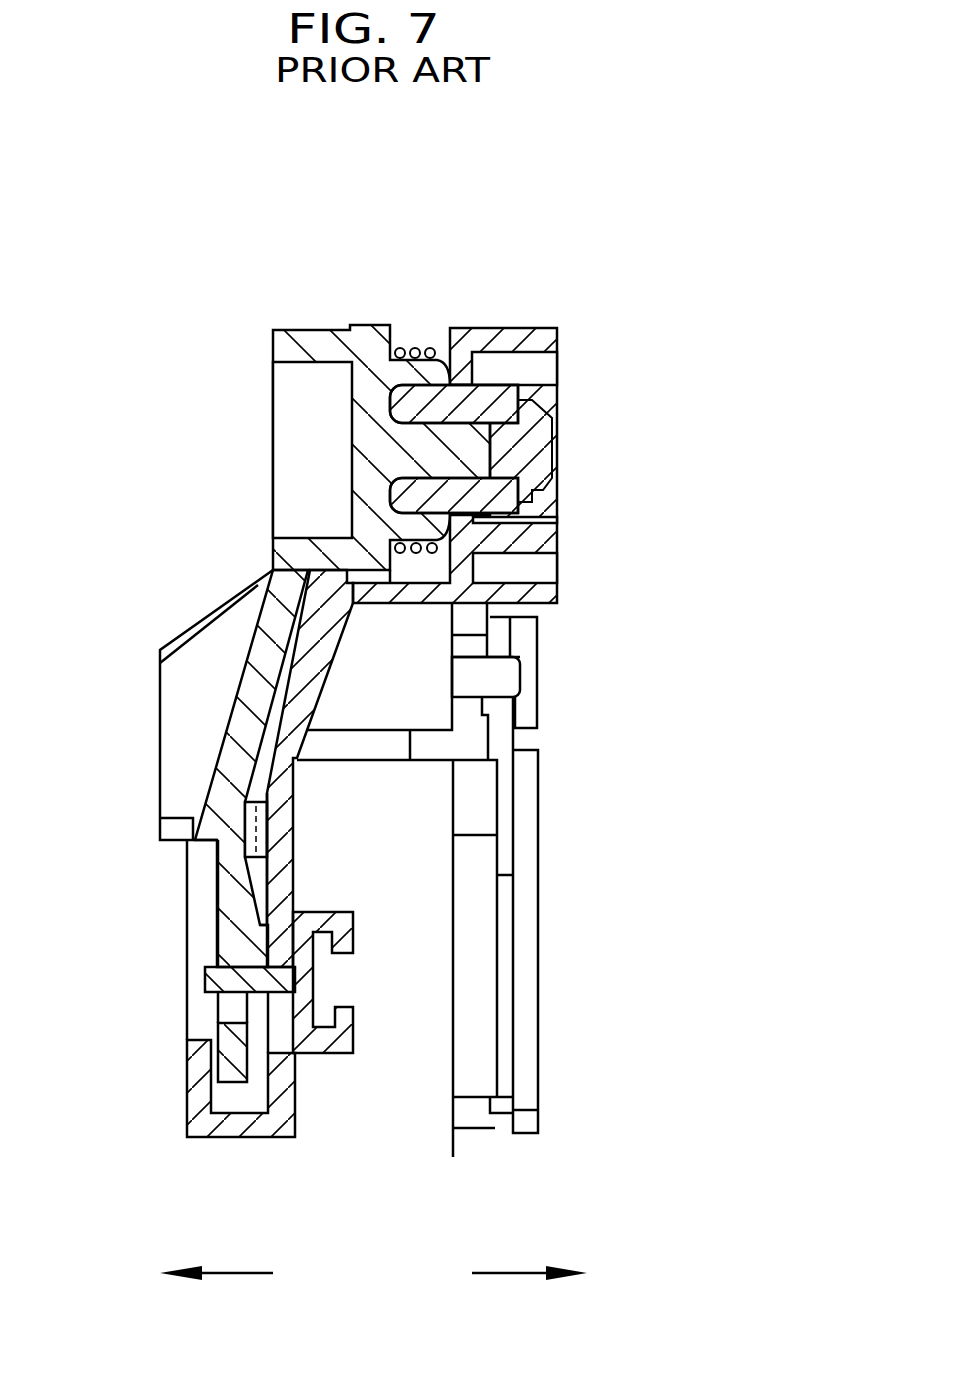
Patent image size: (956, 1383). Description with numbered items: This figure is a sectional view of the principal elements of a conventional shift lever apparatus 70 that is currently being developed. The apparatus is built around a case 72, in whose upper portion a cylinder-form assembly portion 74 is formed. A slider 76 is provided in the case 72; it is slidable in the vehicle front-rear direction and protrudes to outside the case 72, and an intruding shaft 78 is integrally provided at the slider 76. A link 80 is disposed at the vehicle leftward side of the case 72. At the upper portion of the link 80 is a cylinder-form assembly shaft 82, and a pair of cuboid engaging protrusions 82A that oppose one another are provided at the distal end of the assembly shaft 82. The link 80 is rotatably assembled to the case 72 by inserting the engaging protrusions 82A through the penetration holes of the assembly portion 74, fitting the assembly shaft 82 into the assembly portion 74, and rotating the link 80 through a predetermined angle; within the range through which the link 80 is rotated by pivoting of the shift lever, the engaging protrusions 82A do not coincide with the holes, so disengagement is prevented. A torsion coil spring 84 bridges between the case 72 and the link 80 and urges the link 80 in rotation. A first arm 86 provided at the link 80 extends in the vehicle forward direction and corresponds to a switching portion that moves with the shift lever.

The shift lever apparatus 70 is at (371, 232).
The case 72 is at (180, 1080).
The assembly portion 74 is at (552, 418).
The slider 76 is at (335, 912).
The intruding shaft 78 is at (205, 967).
The link 80 is at (266, 329).
The assembly shaft 82 is at (475, 453).
The engaging protrusions 82A is at (520, 430).
The torsion coil spring 84 is at (423, 345).
The first arm 86 is at (215, 613).